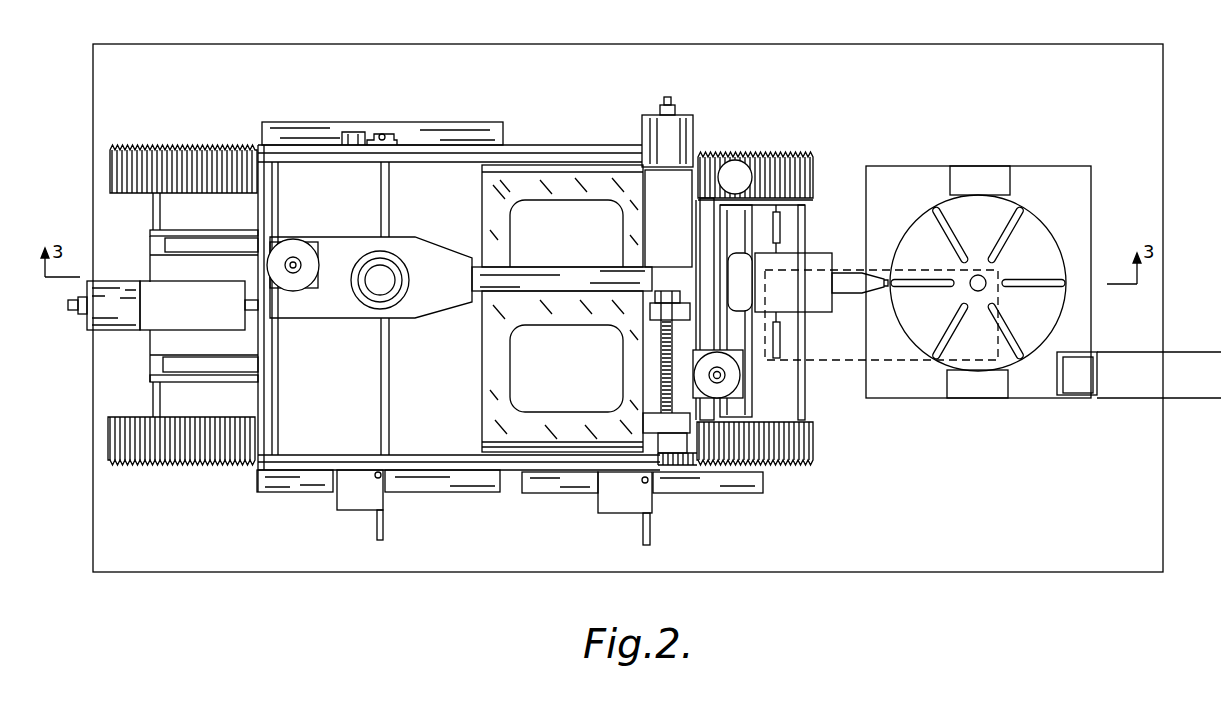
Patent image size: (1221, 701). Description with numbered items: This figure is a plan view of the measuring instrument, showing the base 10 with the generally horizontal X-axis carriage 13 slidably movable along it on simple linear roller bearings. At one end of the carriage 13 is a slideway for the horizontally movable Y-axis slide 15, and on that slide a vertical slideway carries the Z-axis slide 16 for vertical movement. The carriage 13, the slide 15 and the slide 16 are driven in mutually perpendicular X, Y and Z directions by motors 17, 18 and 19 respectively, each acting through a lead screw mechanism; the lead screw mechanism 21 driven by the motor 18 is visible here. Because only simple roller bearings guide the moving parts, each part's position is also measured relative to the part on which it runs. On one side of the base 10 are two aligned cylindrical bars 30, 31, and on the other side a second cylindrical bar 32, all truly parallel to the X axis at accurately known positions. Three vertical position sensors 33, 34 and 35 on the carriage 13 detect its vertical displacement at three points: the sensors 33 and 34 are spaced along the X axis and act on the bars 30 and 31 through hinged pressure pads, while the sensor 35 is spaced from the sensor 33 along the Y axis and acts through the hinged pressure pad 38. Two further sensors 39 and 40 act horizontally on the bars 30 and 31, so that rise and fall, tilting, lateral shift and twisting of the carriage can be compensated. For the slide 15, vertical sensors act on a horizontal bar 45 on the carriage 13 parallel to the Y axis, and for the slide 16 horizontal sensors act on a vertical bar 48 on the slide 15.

The base 10 is at (563, 100).
The X-axis carriage 13 is at (516, 188).
The Y-axis slide 15 is at (688, 405).
The Z-axis slide 16 is at (708, 225).
The motor 17 is at (111, 312).
The motor 18 is at (677, 128).
The motor 19 is at (737, 373).
The lead screw mechanism 21 is at (657, 347).
The cylindrical bar 30 is at (290, 480).
The cylindrical bar 31 is at (562, 482).
The second cylindrical bar 32 is at (289, 133).
The vertical position sensor 33 is at (381, 484).
The vertical position sensor 34 is at (642, 484).
The vertical position sensor 35 is at (385, 133).
The hinged pressure pad 38 is at (357, 133).
The sensor 39 is at (383, 530).
The sensor 40 is at (651, 533).
The horizontal bar 45 is at (737, 213).
The vertical bar 48 is at (742, 173).